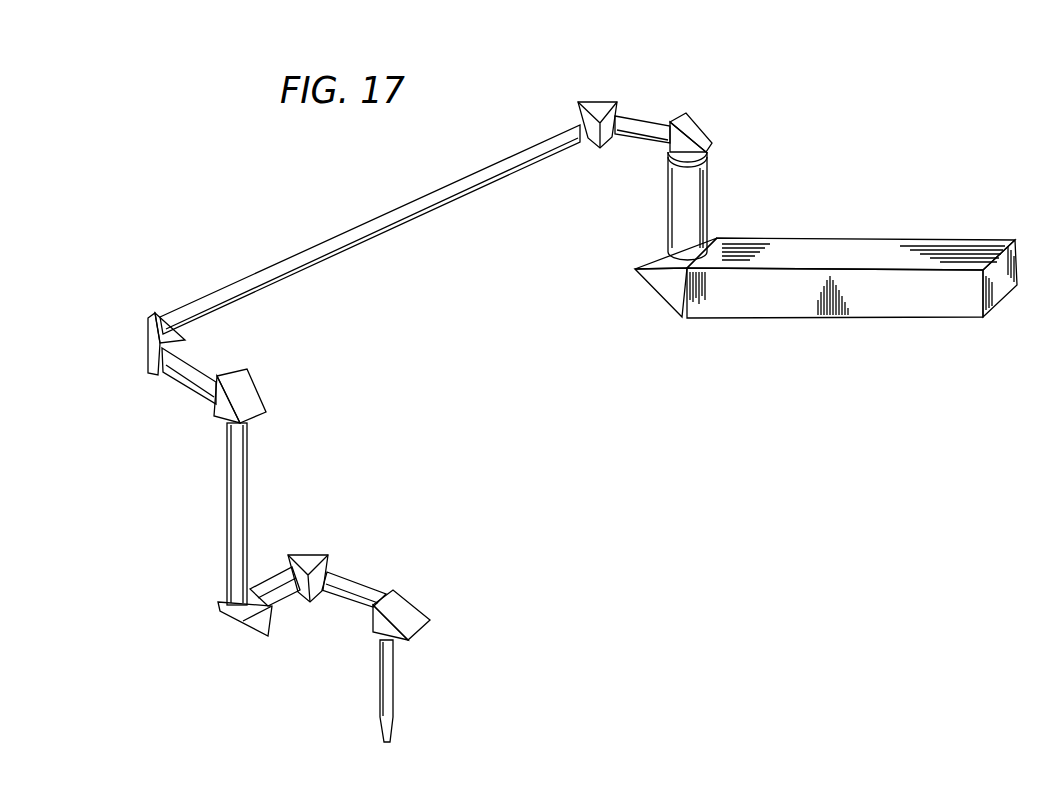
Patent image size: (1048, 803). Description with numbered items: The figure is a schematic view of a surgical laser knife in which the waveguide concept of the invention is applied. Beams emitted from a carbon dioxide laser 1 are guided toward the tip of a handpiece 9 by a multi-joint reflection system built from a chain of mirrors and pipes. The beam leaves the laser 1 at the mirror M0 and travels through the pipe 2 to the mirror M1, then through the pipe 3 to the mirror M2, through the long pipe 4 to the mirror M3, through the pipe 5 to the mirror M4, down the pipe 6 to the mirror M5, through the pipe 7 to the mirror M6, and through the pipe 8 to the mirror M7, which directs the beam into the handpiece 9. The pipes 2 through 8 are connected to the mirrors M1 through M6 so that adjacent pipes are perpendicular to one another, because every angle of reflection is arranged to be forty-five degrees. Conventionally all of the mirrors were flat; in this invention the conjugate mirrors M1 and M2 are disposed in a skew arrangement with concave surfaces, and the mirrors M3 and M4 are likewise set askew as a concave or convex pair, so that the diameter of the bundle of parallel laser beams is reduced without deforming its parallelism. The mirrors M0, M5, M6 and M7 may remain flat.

The carbon dioxide laser 1 is at (790, 318).
The pipe 2 is at (710, 178).
The pipe 3 is at (645, 118).
The pipe 4 is at (400, 208).
The pipe 5 is at (200, 368).
The pipe 6 is at (226, 501).
The pipe 7 is at (282, 597).
The pipe 8 is at (348, 603).
The handpiece 9 is at (395, 668).
The mirror M0 is at (658, 290).
The conjugate mirror M1 is at (705, 110).
The conjugate mirror M2 is at (602, 100).
The conjugate mirror M3 is at (148, 323).
The conjugate mirror M4 is at (258, 380).
The mirror M5 is at (250, 629).
The mirror M6 is at (307, 555).
The mirror M7 is at (410, 604).